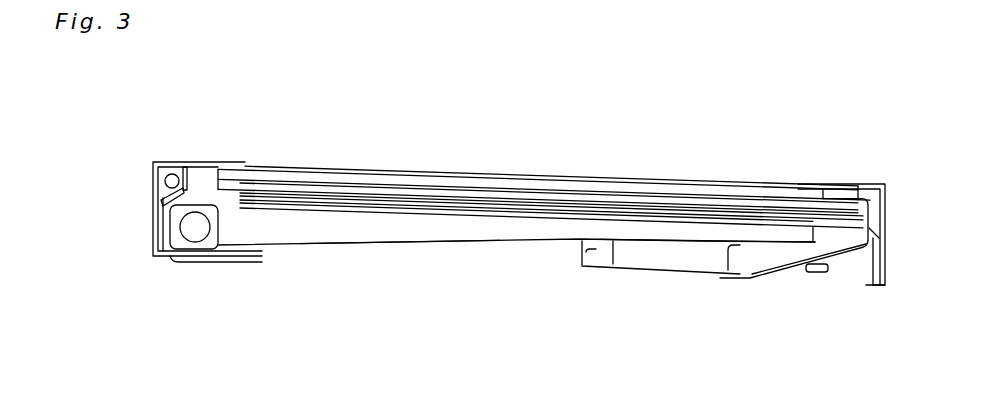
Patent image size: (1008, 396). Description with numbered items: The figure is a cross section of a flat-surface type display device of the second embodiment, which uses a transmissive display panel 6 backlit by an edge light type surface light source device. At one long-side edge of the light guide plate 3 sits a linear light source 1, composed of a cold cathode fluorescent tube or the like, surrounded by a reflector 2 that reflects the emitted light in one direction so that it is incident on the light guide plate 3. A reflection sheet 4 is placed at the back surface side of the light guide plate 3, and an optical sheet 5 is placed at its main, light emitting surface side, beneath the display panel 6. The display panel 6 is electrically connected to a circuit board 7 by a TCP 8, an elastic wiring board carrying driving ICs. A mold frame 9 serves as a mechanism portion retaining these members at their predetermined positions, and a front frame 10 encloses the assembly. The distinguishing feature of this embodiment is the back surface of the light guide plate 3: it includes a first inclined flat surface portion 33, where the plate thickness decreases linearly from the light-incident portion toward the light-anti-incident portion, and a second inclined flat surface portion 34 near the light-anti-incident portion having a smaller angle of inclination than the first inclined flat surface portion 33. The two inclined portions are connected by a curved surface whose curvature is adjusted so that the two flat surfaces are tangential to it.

The linear light source 1 is at (199, 226).
The reflector 2 is at (171, 258).
The light guide plate 3 is at (268, 228).
The reflection sheet 4 is at (356, 248).
The optical sheet 5 is at (305, 207).
The transmissive display panel 6 is at (436, 186).
The circuit board 7 is at (632, 270).
The TCP 8 is at (793, 274).
The mold frame 9 is at (744, 257).
The front frame 10 is at (170, 162).
The first inclined flat surface portion 33 is at (396, 246).
The second inclined flat surface portion 34 is at (693, 243).